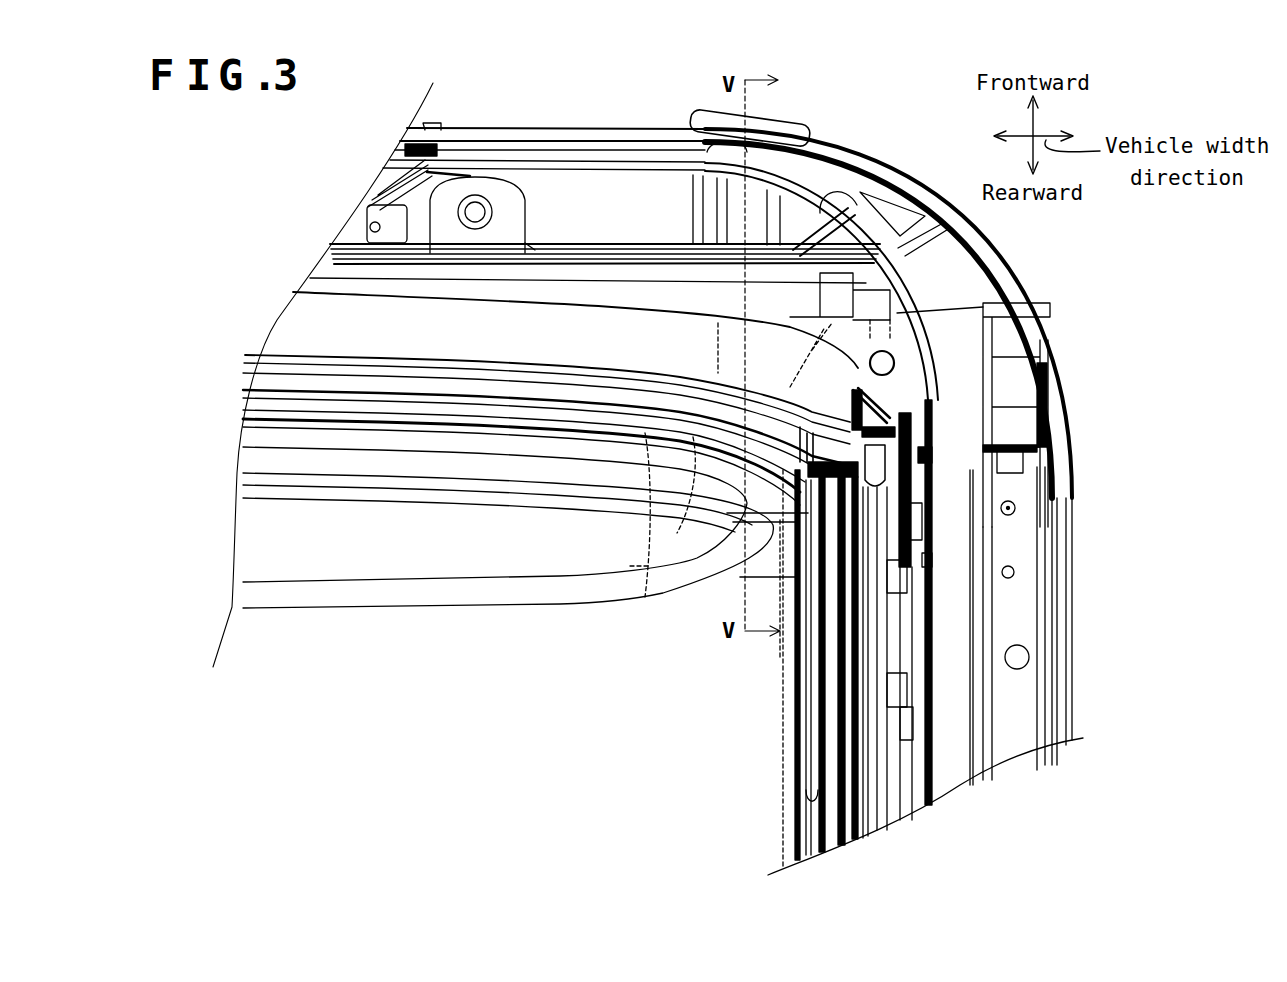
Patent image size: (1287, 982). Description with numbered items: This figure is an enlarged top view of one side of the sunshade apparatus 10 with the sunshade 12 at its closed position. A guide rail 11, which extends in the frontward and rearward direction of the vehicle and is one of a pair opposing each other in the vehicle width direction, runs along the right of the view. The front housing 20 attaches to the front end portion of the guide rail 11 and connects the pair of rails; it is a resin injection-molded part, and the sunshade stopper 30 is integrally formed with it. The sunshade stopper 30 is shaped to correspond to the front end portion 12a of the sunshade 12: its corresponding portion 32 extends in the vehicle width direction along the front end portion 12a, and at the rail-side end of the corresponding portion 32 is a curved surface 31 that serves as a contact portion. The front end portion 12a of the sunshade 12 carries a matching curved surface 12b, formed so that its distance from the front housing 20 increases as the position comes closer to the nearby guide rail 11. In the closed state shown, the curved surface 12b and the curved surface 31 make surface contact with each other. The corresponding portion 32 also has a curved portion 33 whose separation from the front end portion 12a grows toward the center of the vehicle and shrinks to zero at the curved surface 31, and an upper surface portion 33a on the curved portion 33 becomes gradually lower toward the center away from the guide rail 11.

The sunshade apparatus 10 is at (1141, 274).
The guide rail 11 is at (830, 813).
The sunshade 12 is at (465, 750).
The front end portion 12a is at (584, 440).
The curved surface 12b is at (722, 538).
The front housing 20 is at (847, 182).
The sunshade stopper 30 is at (622, 413).
The curved surface 31 is at (747, 462).
The corresponding portion 32 is at (530, 385).
The curved portion 33 is at (463, 383).
The upper surface portion 33a is at (375, 383).